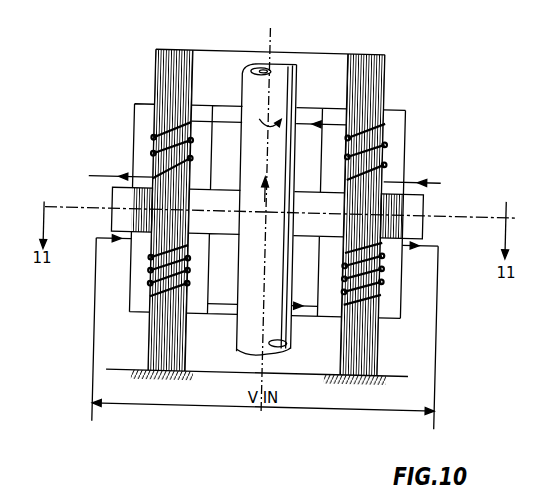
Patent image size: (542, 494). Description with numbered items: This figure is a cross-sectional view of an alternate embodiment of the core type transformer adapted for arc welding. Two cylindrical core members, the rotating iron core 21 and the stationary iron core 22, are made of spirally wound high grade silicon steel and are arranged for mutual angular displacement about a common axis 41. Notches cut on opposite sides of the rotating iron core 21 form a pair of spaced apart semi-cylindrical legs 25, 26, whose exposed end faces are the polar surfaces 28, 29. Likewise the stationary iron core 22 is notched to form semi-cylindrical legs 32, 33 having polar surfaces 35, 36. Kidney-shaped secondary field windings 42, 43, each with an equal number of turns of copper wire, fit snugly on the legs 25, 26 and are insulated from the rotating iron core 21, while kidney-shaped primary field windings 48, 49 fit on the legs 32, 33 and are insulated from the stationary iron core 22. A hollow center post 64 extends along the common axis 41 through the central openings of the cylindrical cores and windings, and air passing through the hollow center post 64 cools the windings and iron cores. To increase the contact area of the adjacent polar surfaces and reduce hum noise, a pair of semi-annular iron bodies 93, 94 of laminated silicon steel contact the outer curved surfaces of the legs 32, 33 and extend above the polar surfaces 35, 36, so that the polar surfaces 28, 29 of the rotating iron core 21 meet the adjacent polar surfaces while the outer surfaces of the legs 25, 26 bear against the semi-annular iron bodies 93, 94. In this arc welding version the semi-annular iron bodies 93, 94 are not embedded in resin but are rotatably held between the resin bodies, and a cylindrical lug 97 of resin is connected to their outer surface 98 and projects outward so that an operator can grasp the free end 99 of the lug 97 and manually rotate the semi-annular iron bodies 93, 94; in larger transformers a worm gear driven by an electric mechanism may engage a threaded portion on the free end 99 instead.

The rotating iron core 21 is at (183, 50).
The stationary iron core 22 is at (150, 346).
The semi-cylindrical leg 25 is at (167, 78).
The semi-cylindrical leg 26 is at (368, 85).
The polar surface 28 is at (145, 212).
The polar surface 29 is at (402, 212).
The semi-cylindrical leg 32 is at (162, 325).
The semi-cylindrical leg 33 is at (360, 343).
The polar surface 35 is at (118, 239).
The polar surface 36 is at (394, 226).
The common axis 41 is at (278, 42).
The secondary field winding 42 is at (172, 128).
The secondary field winding 43 is at (368, 128).
The primary field winding 48 is at (155, 273).
The primary field winding 49 is at (366, 291).
The hollow center post 64 is at (247, 78).
The semi-annular iron body 93 is at (144, 193).
The semi-annular iron body 94 is at (388, 193).
The cylindrical lug 97 is at (120, 212).
The outer surface 98 is at (430, 217).
The free end 99 is at (130, 190).